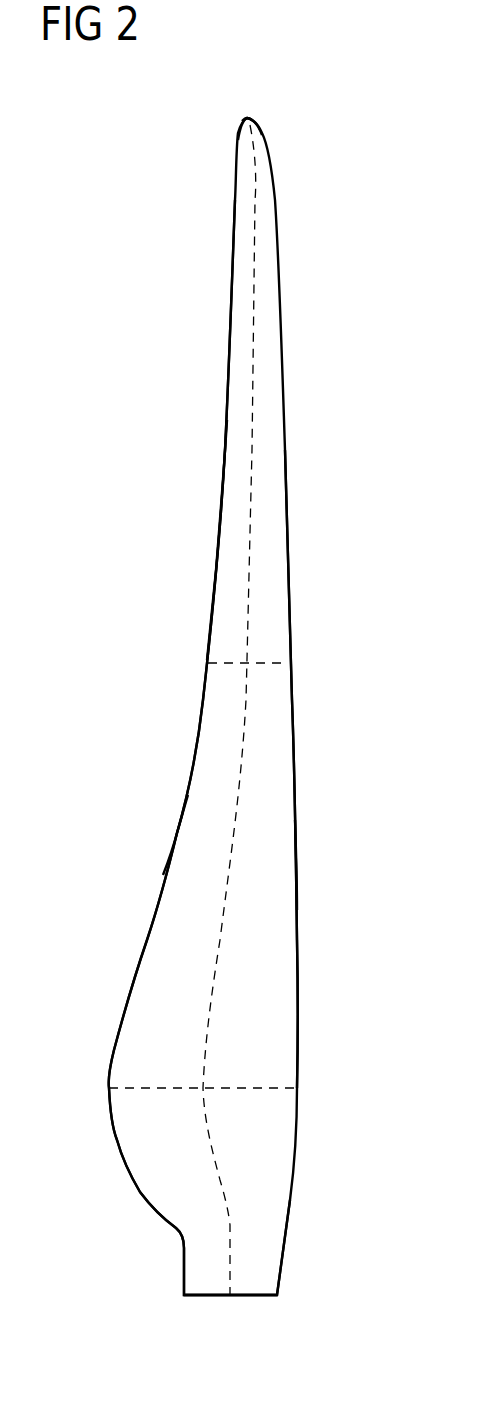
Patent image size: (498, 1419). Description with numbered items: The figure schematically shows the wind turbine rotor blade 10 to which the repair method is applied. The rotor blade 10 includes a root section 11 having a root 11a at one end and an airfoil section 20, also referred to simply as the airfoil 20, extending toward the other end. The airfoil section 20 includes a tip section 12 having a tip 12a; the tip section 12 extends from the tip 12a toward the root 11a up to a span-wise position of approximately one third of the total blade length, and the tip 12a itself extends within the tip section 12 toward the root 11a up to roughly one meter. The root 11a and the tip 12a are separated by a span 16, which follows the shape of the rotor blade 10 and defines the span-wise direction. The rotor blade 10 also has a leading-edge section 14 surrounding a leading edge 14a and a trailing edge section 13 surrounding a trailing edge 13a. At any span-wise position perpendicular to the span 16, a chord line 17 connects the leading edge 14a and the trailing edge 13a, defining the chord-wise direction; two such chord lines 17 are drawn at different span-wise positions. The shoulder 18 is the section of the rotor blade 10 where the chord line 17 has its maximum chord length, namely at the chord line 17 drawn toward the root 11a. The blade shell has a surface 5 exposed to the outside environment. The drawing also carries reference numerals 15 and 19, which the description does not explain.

The rotor blade 10 is at (353, 460).
The root section 11 is at (270, 1253).
The root 11a is at (222, 1297).
The tip section 12 is at (250, 133).
The tip 12a is at (248, 117).
The trailing edge section 13 is at (205, 773).
The trailing edge 13a is at (176, 836).
The leading-edge section 14 is at (280, 810).
The leading edge 14a is at (296, 862).
The chordwise direction 15 is at (163, 973).
The span 16 is at (244, 752).
The chord line 17 is at (263, 662).
The shoulder 18 is at (108, 1088).
The root transition region 19 is at (167, 1185).
The airfoil section 20 is at (228, 572).
The surface 5 is at (281, 949).